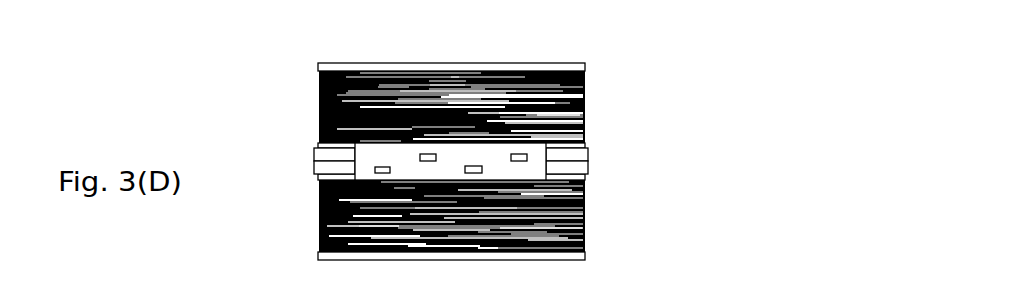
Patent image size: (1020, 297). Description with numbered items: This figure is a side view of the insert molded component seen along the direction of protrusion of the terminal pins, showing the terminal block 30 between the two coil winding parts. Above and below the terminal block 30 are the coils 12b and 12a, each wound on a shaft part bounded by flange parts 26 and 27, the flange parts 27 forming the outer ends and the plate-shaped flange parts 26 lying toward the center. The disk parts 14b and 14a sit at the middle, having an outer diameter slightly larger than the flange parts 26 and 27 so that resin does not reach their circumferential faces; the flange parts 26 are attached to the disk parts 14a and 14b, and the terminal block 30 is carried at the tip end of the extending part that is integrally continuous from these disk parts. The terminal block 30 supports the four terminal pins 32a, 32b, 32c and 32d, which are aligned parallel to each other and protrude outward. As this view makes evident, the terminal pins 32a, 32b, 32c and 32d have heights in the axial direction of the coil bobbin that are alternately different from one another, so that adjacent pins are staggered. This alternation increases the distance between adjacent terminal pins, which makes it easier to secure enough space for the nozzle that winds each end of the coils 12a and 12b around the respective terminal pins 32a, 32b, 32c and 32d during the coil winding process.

The coil 12a is at (318, 215).
The coil 12b is at (318, 107).
The disk part 14a is at (589, 170).
The disk part 14b is at (589, 153).
The flange part 26 is at (585, 141).
The flange part 27 is at (585, 65).
The terminal block 30 is at (363, 155).
The terminal pin 32a is at (518, 154).
The terminal pin 32b is at (477, 166).
The terminal pin 32c is at (428, 154).
The terminal pin 32d is at (384, 167).